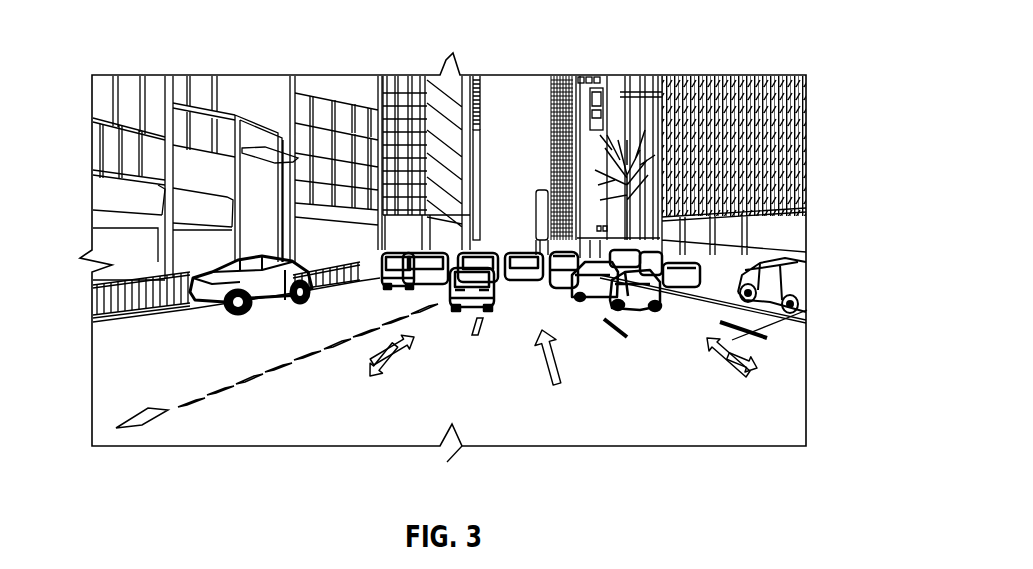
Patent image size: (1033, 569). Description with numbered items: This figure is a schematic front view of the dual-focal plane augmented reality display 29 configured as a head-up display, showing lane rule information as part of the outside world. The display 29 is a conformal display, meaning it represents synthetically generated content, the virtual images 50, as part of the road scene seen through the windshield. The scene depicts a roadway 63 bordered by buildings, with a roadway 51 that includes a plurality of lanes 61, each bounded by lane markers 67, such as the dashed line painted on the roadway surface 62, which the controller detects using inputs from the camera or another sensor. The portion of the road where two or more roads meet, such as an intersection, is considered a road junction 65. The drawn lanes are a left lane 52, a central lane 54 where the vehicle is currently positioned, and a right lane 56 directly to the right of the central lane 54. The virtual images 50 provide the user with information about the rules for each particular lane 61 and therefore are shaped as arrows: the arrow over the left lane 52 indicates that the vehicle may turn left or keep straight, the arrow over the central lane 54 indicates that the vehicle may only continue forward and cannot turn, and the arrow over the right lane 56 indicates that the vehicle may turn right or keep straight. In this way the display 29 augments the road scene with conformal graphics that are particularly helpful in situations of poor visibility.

The display 29 is at (803, 62).
The virtual image 50 is at (391, 353).
The roadway 51 is at (439, 332).
The left lane 52 is at (224, 434).
The central lane 54 is at (600, 434).
The right lane 56 is at (803, 270).
The lane 61 is at (305, 378).
The roadway surface 62 is at (717, 410).
The roadway 63 is at (471, 411).
The road junction 65 is at (478, 257).
The lane marker 67 is at (143, 410).